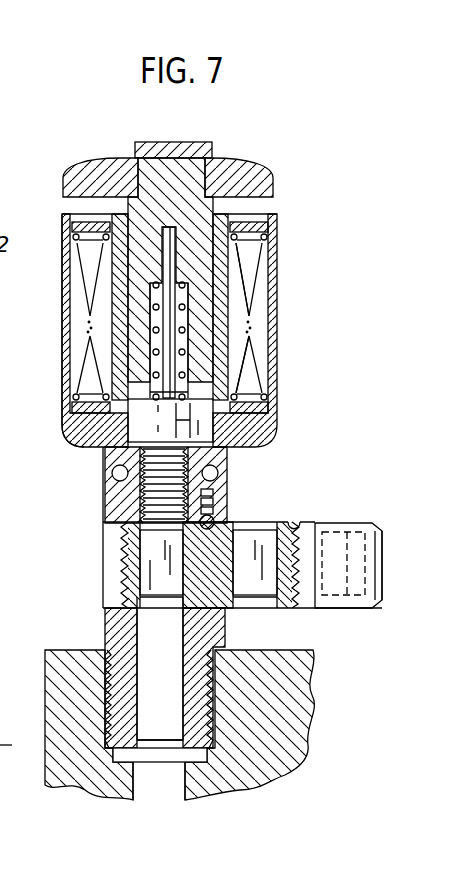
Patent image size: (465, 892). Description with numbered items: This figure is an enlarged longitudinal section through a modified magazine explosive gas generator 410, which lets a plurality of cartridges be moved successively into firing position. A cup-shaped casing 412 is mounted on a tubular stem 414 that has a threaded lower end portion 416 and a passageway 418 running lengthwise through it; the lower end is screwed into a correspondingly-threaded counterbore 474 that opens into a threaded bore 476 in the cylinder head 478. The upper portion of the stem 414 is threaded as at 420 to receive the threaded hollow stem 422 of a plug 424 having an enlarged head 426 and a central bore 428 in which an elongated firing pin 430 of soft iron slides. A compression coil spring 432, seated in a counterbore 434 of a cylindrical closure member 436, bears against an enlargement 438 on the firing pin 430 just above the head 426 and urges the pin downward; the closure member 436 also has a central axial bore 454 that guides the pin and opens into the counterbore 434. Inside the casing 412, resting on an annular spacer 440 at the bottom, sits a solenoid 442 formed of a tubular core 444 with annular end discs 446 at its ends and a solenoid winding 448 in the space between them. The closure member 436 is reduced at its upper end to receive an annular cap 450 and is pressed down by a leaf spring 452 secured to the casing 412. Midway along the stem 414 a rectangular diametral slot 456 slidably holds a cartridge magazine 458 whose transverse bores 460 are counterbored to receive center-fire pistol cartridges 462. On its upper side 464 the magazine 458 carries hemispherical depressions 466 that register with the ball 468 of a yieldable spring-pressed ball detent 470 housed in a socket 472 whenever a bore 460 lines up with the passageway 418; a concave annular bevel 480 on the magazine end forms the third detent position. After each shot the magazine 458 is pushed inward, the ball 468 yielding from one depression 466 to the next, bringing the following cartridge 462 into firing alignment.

The magazine explosive gas generator 410 is at (257, 164).
The cup-shaped casing 412 is at (277, 392).
The tubular stem 414 is at (103, 513).
The threaded lower end portion 416 is at (220, 682).
The passageway 418 is at (175, 708).
The threads 420 is at (140, 496).
The hollow stem 422 is at (226, 464).
The plug 424 is at (112, 472).
The enlarged head 426 is at (90, 447).
The central bore 428 is at (226, 446).
The firing pin 430 is at (176, 396).
The compression coil spring 432 is at (178, 264).
The counterbore 434 is at (157, 282).
The cylindrical closure member 436 is at (215, 205).
The enlargement 438 is at (162, 412).
The annular spacer 440 is at (68, 433).
The solenoid 442 is at (250, 339).
The tubular core 444 is at (235, 308).
The annular end discs 446 is at (268, 232).
The solenoid winding 448 is at (256, 270).
The annular cap 450 is at (120, 160).
The leaf spring 452 is at (183, 143).
The central axial bore 454 is at (165, 228).
The diametral slot 456 is at (106, 607).
The cartridge magazine 458 is at (384, 542).
The transverse bores 460 is at (255, 563).
The cartridges 462 is at (160, 600).
The upper side 464 is at (360, 523).
The hemispherical depressions 466 is at (294, 524).
The ball 468 is at (215, 520).
The spring-pressed ball detent 470 is at (216, 504).
The socket 472 is at (214, 492).
The threaded counterbore 474 is at (210, 750).
The threaded bore 476 is at (178, 790).
The cylinder head 478 is at (312, 700).
The concave annular bevel 480 is at (383, 601).